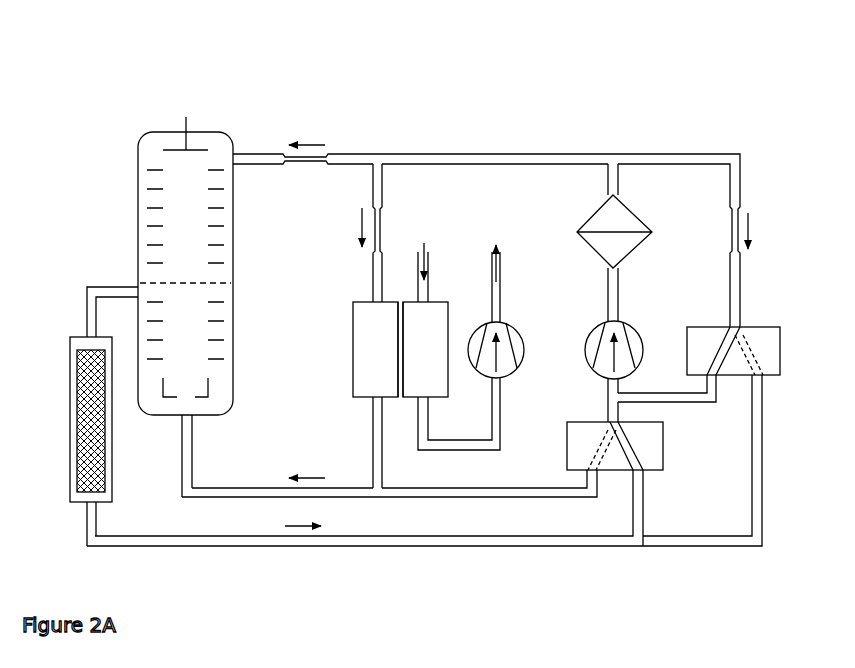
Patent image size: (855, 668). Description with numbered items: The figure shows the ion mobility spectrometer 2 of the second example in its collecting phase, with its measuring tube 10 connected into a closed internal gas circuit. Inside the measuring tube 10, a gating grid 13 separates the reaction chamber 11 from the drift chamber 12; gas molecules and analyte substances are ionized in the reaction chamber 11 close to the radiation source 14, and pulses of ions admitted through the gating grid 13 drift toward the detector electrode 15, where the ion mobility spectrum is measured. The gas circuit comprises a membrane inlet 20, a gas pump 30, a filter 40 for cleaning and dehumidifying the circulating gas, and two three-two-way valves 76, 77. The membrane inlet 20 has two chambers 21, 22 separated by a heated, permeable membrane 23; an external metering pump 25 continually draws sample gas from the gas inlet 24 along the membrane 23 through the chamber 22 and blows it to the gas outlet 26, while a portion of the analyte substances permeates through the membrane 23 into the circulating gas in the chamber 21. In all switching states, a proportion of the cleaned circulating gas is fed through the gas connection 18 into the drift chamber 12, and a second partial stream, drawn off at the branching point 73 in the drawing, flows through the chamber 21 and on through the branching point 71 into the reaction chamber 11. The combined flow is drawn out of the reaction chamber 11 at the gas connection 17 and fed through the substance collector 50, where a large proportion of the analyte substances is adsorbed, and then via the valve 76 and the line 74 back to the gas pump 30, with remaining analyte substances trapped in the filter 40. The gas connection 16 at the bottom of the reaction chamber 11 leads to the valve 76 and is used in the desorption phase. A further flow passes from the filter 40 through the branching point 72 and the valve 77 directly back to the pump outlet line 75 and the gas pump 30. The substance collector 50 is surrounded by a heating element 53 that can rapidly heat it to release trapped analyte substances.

The ion mobility spectrometer 2 is at (452, 80).
The measuring tube 10 is at (85, 208).
The reaction chamber 11 is at (185, 330).
The drift chamber 12 is at (185, 216).
The gating grid 13 is at (218, 281).
The radiation source 14 is at (212, 398).
The detector electrode 15 is at (203, 146).
The gas connection 16 is at (183, 417).
The gas connection 17 is at (137, 290).
The gas connection 18 is at (234, 163).
The membrane inlet 20 is at (467, 233).
The chamber 21 is at (375, 349).
The chamber 22 is at (425, 349).
The membrane 23 is at (395, 363).
The gas inlet 24 is at (459, 346).
The metering pump 25 is at (505, 325).
The gas outlet 26 is at (510, 283).
The gas pump 30 is at (587, 340).
The filter 40 is at (638, 218).
The substance collector 50 is at (75, 445).
The heating element 53 is at (70, 378).
The branching point 71 is at (377, 490).
The branching point 72 is at (615, 163).
The branch pipe 73 is at (377, 162).
The bottom pipe 74 is at (640, 540).
The pump outlet pipe 75 is at (612, 396).
The 3/2-way valve 76 is at (663, 453).
The 3/2-way valve 77 is at (782, 345).